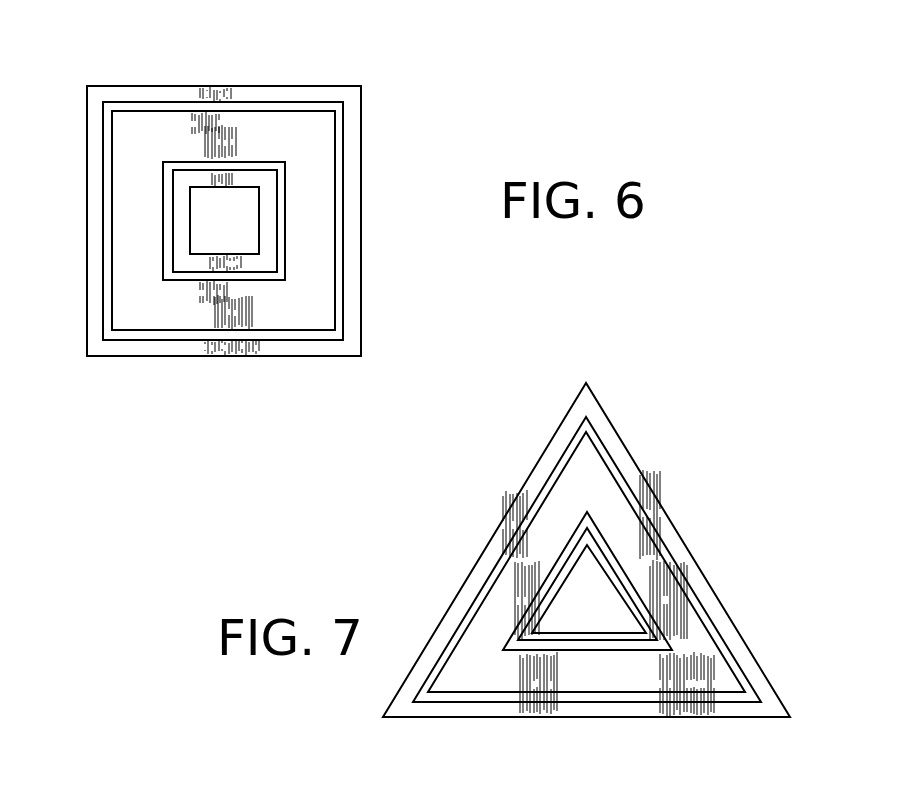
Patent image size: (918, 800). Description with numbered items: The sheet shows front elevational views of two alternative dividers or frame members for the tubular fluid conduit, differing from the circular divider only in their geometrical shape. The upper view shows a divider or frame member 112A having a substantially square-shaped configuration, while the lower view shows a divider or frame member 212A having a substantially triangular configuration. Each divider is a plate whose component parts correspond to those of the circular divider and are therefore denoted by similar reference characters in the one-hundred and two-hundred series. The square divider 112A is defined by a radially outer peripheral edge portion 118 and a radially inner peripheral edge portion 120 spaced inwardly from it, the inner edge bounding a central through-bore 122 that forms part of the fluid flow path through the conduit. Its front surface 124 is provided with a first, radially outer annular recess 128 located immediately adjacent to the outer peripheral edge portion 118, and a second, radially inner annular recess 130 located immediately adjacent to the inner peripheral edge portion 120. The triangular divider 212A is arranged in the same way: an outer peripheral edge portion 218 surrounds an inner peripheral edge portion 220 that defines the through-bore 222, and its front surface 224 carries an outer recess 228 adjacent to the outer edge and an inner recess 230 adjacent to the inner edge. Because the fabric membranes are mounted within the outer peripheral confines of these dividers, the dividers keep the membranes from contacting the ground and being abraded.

In FIG. 6, the divider or frame member 112A is at (253, 127).
In FIG. 6, the outer peripheral edge portion 118 is at (362, 167).
In FIG. 6, the inner peripheral edge portion 120 is at (193, 228).
In FIG. 6, the through-bore 122 is at (203, 240).
In FIG. 6, the front surface 124 is at (130, 295).
In FIG. 6, the first, radially outer annular recess 128 is at (300, 333).
In FIG. 6, the second, radially inner annular recess 130 is at (283, 248).
In FIG. 7, the divider or frame member 212A is at (603, 483).
In FIG. 7, the outer peripheral edge portion 218 is at (450, 602).
In FIG. 7, the inner peripheral edge portion 220 is at (567, 625).
In FIG. 7, the through-bore 222 is at (590, 582).
In FIG. 7, the front surface 224 is at (635, 675).
In FIG. 7, the first, radially outer annular recess 228 is at (708, 625).
In FIG. 7, the second, radially inner annular recess 230 is at (552, 568).